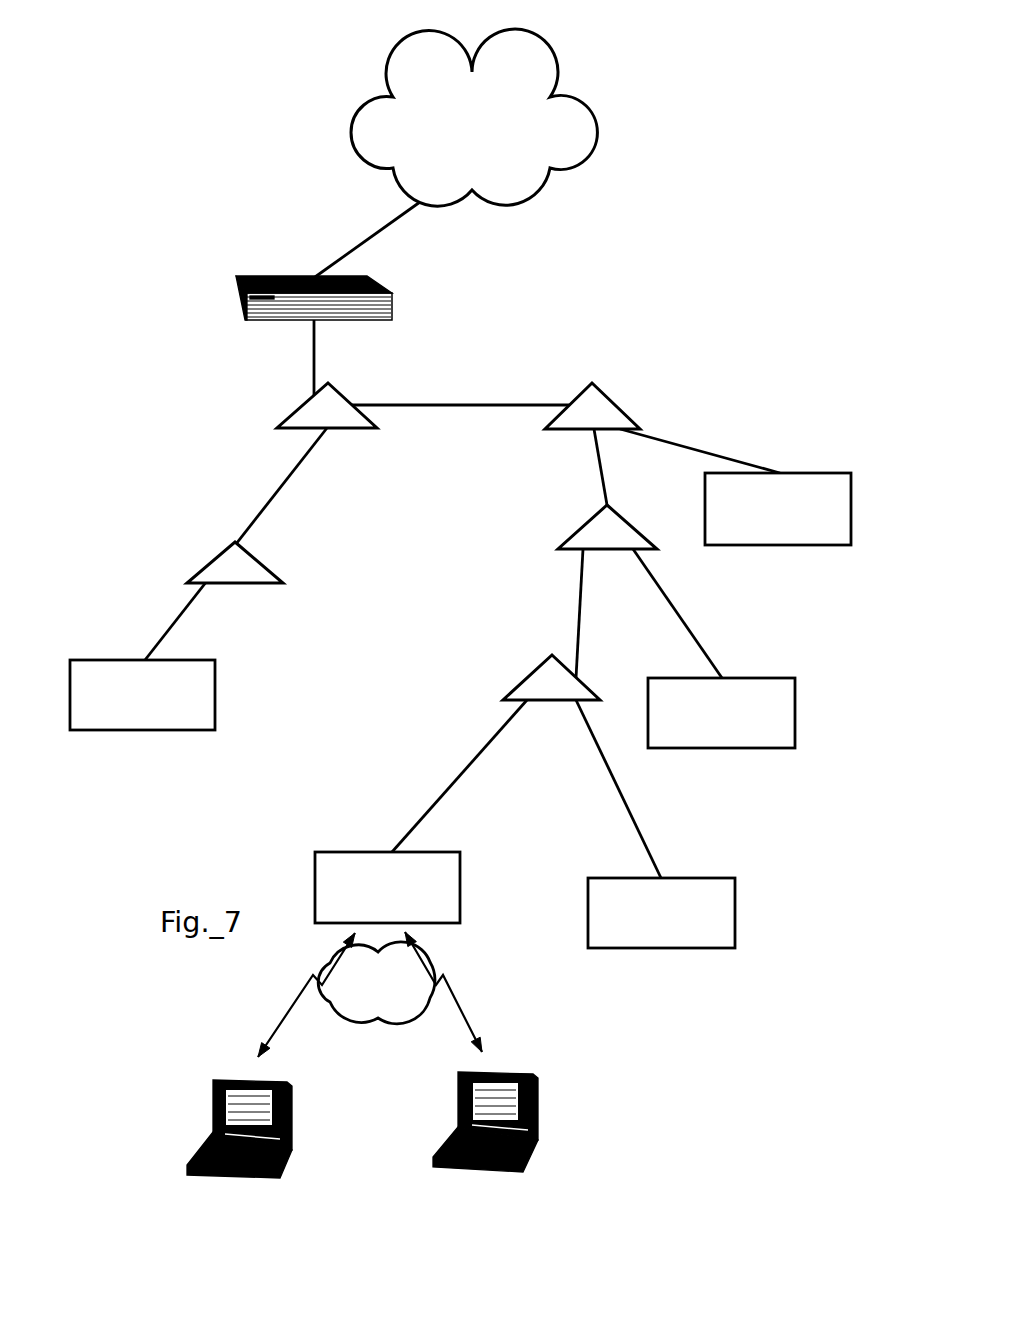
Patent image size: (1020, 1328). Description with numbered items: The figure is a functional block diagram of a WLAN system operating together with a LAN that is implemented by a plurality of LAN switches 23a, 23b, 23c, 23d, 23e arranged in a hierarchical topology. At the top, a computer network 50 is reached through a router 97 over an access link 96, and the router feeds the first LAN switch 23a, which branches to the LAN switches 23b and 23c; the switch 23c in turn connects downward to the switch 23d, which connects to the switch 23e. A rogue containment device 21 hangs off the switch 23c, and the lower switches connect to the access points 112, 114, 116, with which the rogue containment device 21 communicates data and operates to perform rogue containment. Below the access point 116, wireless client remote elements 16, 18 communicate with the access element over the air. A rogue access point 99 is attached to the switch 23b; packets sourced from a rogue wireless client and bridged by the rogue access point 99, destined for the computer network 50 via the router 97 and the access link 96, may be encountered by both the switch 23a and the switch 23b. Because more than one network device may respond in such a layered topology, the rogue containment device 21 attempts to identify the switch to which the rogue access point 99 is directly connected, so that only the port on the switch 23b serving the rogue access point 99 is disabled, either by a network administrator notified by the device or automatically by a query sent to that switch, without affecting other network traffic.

The computer network 50 is at (578, 105).
The access link 96 is at (358, 240).
The router 97 is at (275, 276).
The LAN switch 23a is at (300, 428).
The LAN switch 23b is at (233, 583).
The LAN switch 23c is at (617, 428).
The LAN switch 23d is at (597, 527).
The LAN switch 23e is at (548, 700).
The rogue containment device 21 is at (851, 508).
The rogue access point 99 is at (140, 733).
The access point 112 is at (795, 695).
The access point 114 is at (735, 895).
The access point 116 is at (460, 888).
The client remote element 16 is at (238, 1178).
The client remote element 18 is at (485, 1168).